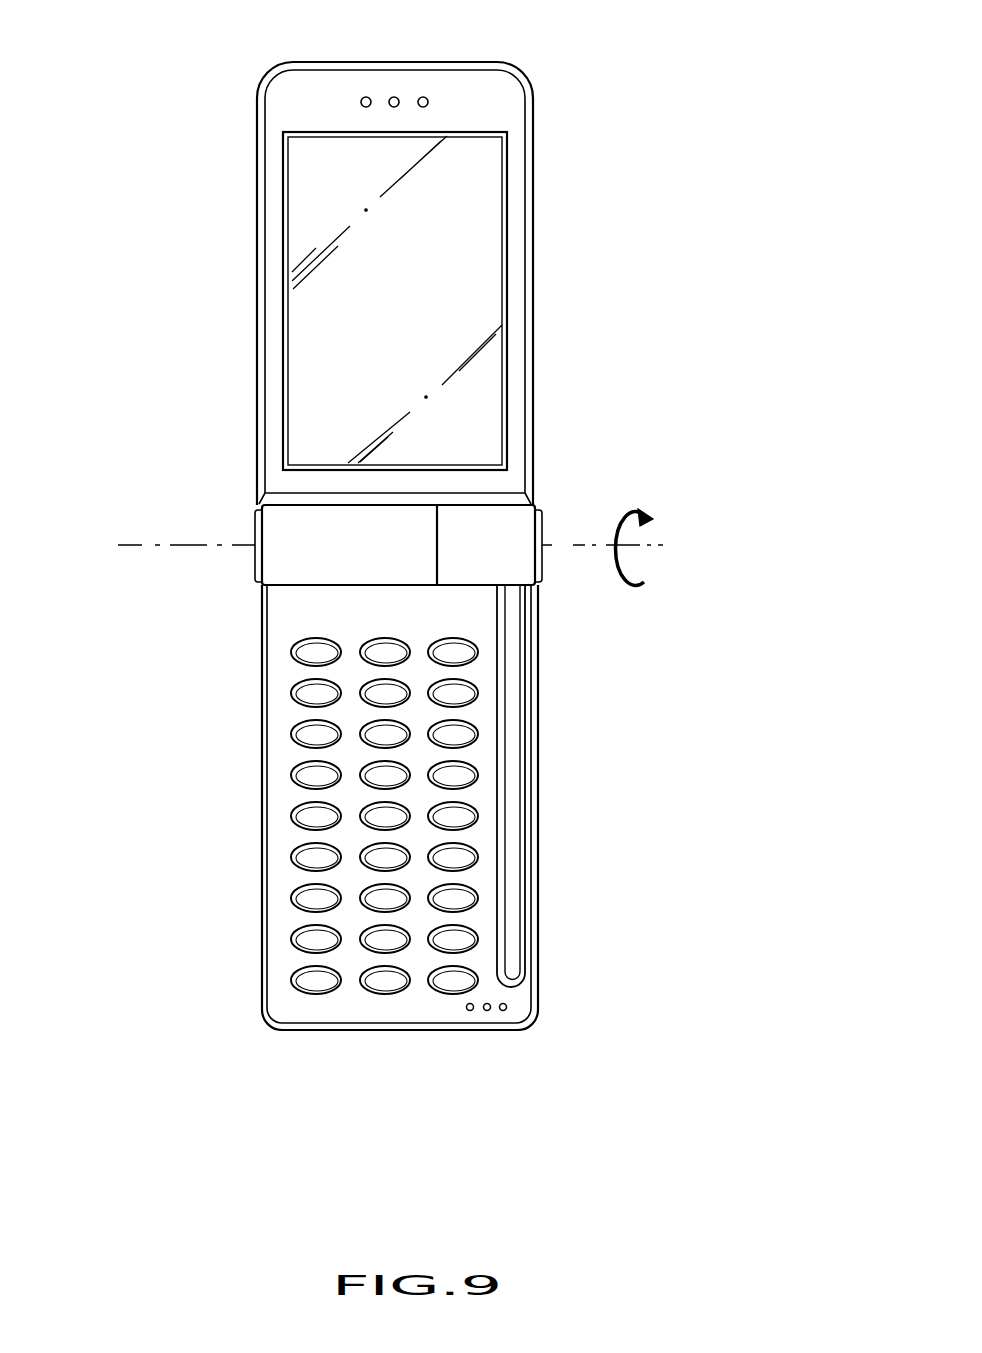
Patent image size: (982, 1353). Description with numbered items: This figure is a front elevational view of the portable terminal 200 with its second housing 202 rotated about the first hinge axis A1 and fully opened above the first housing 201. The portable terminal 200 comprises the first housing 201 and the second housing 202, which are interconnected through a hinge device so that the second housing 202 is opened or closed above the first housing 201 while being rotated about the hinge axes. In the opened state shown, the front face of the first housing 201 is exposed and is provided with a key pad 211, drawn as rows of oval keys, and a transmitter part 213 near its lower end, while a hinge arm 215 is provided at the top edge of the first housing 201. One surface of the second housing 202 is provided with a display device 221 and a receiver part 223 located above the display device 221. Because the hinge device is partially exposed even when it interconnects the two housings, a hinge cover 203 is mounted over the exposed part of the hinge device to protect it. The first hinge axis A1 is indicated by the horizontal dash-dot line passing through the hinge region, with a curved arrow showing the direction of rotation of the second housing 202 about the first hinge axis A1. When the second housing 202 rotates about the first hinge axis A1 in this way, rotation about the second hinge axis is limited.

The portable terminal 200 is at (813, 267).
The first housing 201 is at (244, 720).
The second housing 202 is at (500, 112).
The hinge cover 203 is at (513, 567).
The key pad 211 is at (308, 856).
The transmitter part 213 is at (487, 1012).
The hinge arm 215 is at (275, 525).
The display device 221 is at (482, 258).
The receiver part 223 is at (394, 97).
The first hinge axis A1 is at (663, 545).